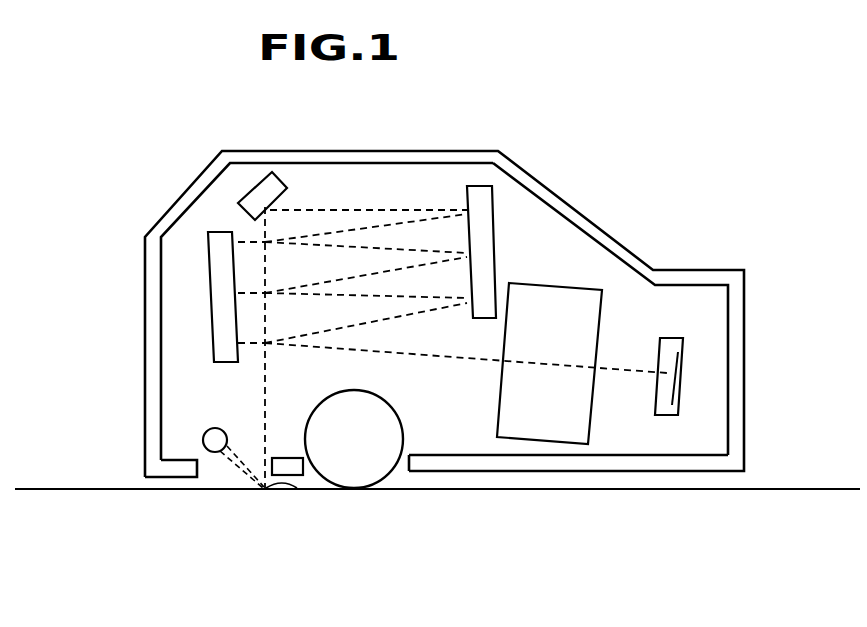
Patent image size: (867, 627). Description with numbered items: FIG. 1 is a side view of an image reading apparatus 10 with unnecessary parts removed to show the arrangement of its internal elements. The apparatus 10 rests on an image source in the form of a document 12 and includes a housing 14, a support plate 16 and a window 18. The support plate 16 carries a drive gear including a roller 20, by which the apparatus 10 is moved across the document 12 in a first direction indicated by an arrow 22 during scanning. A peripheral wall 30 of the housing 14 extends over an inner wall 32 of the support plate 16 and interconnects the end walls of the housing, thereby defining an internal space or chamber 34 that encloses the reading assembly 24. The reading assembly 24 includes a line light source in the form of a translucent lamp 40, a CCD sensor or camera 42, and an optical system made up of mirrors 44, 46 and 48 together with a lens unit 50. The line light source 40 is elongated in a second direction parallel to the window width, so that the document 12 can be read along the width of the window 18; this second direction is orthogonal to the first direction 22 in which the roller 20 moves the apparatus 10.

The image reading apparatus 10 is at (623, 158).
The document 12 is at (263, 489).
The housing 14 is at (437, 148).
The support plate 16 is at (620, 471).
The window 18 is at (197, 470).
The roller 20 is at (403, 433).
The arrow 22 is at (60, 320).
The reading assembly 24 is at (186, 365).
The peripheral wall 30 is at (397, 163).
The inner wall 32 is at (666, 452).
The internal space or chamber 34 is at (642, 312).
The line light source 40 is at (204, 438).
The CCD sensor or camera 42 is at (681, 352).
The mirror 44 is at (262, 180).
The mirror 46 is at (496, 203).
The mirror 48 is at (203, 242).
The lens unit 50 is at (572, 285).